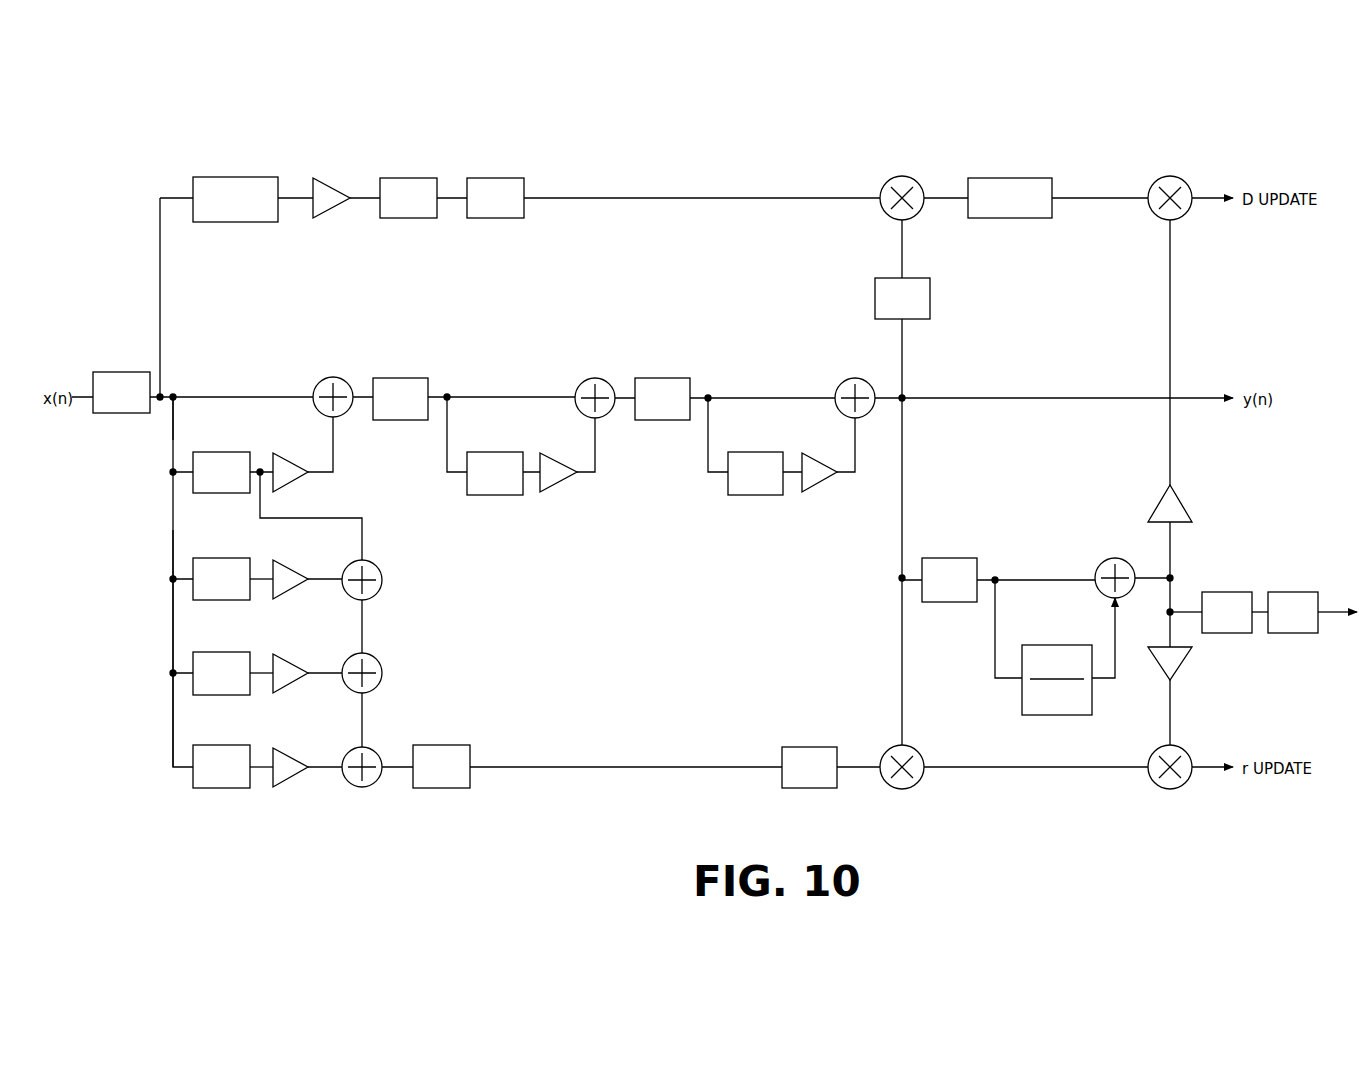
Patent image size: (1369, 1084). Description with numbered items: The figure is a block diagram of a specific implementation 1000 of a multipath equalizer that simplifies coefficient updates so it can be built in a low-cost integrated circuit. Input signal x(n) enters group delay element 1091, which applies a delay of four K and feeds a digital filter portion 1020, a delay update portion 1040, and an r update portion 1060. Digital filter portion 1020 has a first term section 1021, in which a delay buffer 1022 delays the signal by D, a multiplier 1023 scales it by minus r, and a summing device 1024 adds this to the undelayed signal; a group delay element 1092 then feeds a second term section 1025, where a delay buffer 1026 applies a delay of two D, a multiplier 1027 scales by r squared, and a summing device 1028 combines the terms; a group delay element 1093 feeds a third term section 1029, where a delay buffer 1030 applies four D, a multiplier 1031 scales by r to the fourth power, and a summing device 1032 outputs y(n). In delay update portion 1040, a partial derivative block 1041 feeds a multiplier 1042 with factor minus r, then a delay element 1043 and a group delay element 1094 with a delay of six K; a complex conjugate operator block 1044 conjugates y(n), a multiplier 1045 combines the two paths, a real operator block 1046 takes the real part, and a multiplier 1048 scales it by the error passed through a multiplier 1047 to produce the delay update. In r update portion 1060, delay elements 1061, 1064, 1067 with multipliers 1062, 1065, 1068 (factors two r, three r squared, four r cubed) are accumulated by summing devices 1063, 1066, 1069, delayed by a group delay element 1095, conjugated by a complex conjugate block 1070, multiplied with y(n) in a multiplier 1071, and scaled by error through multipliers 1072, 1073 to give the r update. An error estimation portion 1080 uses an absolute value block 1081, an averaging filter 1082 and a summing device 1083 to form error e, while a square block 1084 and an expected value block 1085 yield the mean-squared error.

The multipath equalizer implementation 1000 is at (613, 859).
The digital filter portion 1020 is at (138, 466).
The first term section 1021 is at (266, 346).
The delay buffer 1022 is at (215, 452).
The multiplier 1023 is at (293, 491).
The summing device 1024 is at (335, 378).
The second term section 1025 is at (524, 350).
The delay buffer 1026 is at (505, 452).
The multiplier 1027 is at (562, 490).
The summing device 1028 is at (595, 378).
The third term section 1029 is at (764, 350).
The delay buffer 1030 is at (763, 452).
The multiplier 1031 is at (823, 490).
The summing device 1032 is at (853, 378).
The delay update portion 1040 is at (136, 198).
The partial derivative block 1041 is at (241, 177).
The multiplier 1042 is at (335, 214).
The delay element 1043 is at (385, 178).
The complex conjugate operator block 1044 is at (915, 278).
The multiplier 1045 is at (908, 178).
The real operator block 1046 is at (1013, 178).
The multiplier 1047 is at (1154, 501).
The multiplier 1048 is at (1175, 177).
The r update portion 1060 is at (138, 640).
The delay element 1061 is at (215, 558).
The multiplier 1062 is at (295, 598).
The summing device 1063 is at (374, 560).
The delay element 1064 is at (215, 652).
The multiplier 1065 is at (295, 691).
The summing device 1066 is at (374, 653).
The delay element 1067 is at (215, 745).
The multiplier 1068 is at (295, 784).
The summing device 1069 is at (374, 745).
The complex conjugate block 1070 is at (812, 747).
The multiplier 1071 is at (916, 750).
The multiplier 1072 is at (1191, 661).
The multiplier 1073 is at (1183, 750).
The error estimation portion 1080 is at (1276, 544).
The absolute value block 1081 is at (945, 558).
The averaging filter 1082 is at (1050, 645).
The summing device 1083 is at (1110, 558).
The square block 1084 is at (1225, 592).
The expected value block 1085 is at (1293, 592).
The group delay element 1091 is at (115, 372).
The group delay element 1092 is at (404, 378).
The group delay element 1093 is at (663, 378).
The group delay element 1094 is at (498, 178).
The group delay element 1095 is at (444, 745).